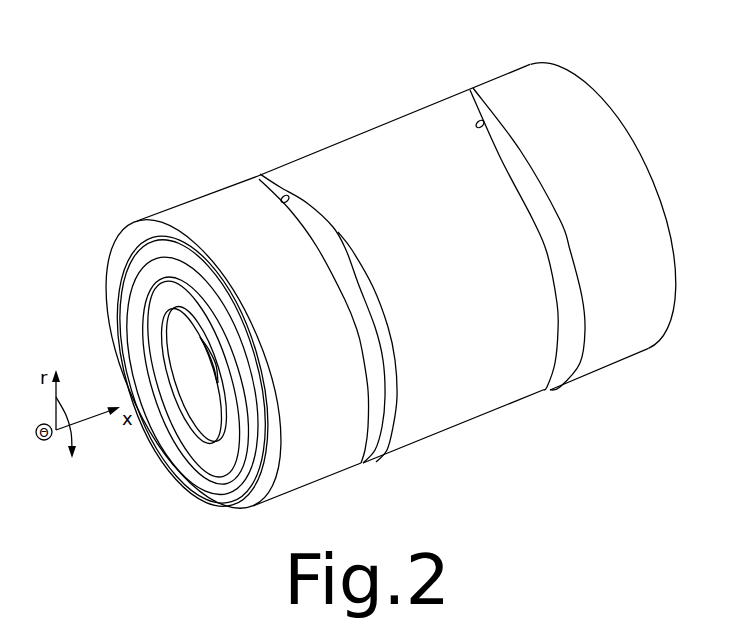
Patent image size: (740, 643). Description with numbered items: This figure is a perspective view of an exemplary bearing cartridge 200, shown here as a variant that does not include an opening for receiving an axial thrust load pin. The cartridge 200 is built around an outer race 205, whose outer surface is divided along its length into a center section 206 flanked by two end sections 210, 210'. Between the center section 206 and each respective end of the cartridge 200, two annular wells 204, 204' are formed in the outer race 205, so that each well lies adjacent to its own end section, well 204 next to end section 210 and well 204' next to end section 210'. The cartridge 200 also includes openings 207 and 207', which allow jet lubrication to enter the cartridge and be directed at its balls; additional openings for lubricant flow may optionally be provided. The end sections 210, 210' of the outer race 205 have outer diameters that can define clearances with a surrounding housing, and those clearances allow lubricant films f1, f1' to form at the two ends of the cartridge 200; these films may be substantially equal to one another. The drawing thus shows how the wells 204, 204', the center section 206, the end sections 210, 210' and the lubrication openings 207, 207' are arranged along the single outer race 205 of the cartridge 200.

The bearing cartridge 200 is at (194, 110).
The annular well 204 is at (354, 336).
The annular well 204' is at (557, 258).
The outer race 205 is at (262, 507).
The center section 206 is at (358, 150).
The opening 207 is at (349, 215).
The opening 207' is at (436, 144).
The end section 210 is at (215, 344).
The end section 210' is at (563, 209).
The lubricant film f1 is at (336, 492).
The lubricant film f1' is at (599, 390).